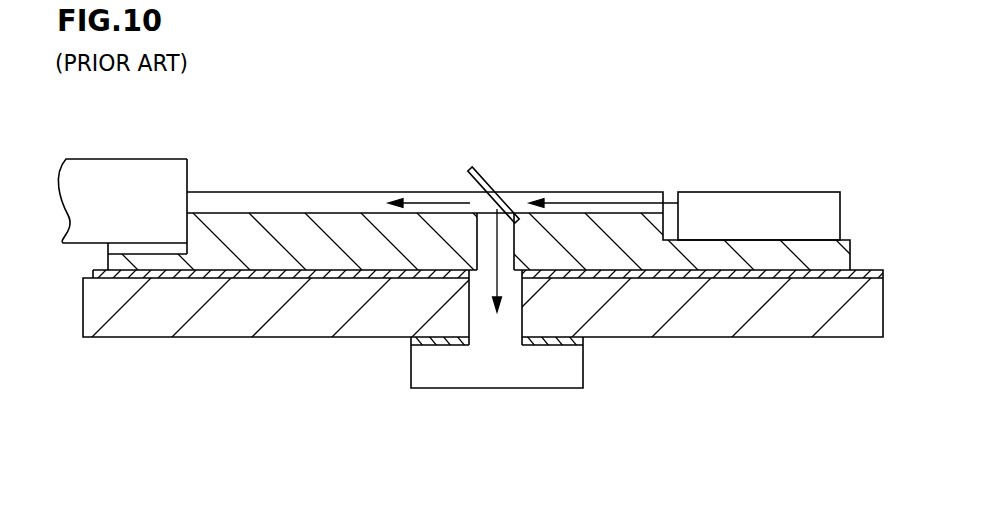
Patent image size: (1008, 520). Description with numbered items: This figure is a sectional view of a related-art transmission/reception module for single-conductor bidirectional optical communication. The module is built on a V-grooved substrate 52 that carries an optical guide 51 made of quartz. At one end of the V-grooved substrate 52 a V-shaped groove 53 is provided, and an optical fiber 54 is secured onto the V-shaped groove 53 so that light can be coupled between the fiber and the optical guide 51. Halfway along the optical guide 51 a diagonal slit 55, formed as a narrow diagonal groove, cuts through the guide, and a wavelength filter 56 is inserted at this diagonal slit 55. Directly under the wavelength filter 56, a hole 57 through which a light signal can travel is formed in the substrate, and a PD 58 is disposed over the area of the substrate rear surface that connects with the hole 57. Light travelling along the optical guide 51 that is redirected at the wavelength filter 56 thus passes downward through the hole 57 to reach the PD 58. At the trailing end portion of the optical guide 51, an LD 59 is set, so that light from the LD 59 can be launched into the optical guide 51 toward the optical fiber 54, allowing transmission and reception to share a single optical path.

The optical guide 51 is at (353, 208).
The V-grooved substrate 52 is at (277, 228).
The V-shaped groove 53 is at (146, 250).
The optical fiber 54 is at (146, 158).
The diagonal slit 55 is at (500, 190).
The wavelength filter 56 is at (471, 166).
The hole 57 is at (508, 282).
The PD 58 is at (583, 370).
The LD 59 is at (748, 192).